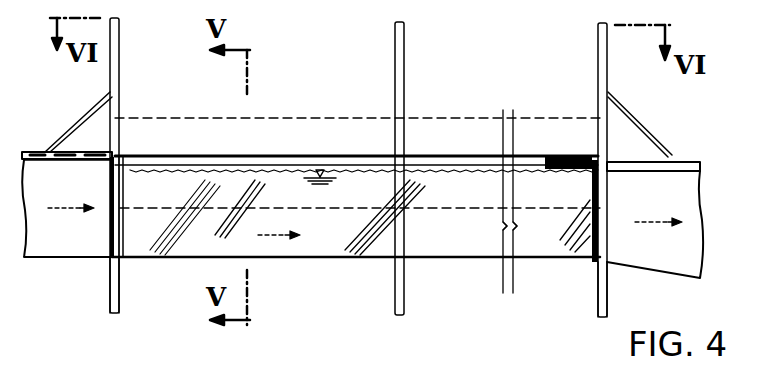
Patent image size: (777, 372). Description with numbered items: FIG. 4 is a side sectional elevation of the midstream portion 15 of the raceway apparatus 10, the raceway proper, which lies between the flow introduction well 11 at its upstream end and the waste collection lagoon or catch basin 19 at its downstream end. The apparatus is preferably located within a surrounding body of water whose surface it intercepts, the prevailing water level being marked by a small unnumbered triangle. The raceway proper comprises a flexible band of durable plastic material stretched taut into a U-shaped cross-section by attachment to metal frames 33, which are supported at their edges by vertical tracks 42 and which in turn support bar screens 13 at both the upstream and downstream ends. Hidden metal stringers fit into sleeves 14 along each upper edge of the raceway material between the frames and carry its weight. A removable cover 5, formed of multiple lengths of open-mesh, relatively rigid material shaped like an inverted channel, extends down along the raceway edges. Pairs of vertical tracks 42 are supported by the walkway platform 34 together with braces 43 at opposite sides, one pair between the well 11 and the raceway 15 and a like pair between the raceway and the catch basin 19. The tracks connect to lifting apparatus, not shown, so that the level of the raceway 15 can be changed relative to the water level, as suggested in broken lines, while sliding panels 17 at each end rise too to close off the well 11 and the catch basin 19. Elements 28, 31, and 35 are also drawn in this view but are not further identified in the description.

The removable cover 5 is at (337, 165).
The raceway apparatus 10 is at (348, 78).
The flow introduction well 11 is at (86, 258).
The bar screen 13 is at (122, 188).
The sleeve 14 is at (444, 164).
The midstream portion 15 is at (335, 258).
The sliding panel 17 is at (120, 286).
The catch basin 19 is at (656, 272).
The inlet rail 28 is at (34, 152).
The break section 31 is at (490, 262).
The metal frame 33 is at (130, 157).
The walkway platform 34 is at (643, 166).
The floor 35 is at (448, 257).
The vertical track 42 is at (118, 36).
The brace 43 is at (96, 100).